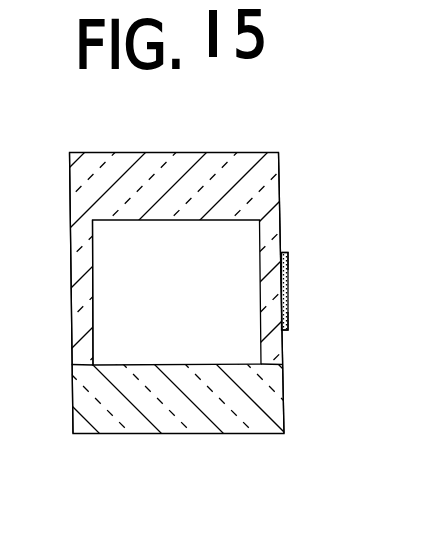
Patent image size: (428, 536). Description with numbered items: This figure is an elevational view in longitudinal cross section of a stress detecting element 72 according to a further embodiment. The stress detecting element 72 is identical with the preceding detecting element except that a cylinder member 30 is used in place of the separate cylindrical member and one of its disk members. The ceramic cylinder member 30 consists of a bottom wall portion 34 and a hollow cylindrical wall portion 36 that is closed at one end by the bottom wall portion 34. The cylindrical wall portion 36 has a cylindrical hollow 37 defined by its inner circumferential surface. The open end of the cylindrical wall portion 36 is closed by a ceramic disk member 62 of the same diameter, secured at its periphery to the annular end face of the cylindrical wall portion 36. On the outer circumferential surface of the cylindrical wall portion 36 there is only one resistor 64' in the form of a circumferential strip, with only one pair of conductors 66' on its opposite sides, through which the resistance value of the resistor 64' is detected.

The cylinder member 30 is at (63, 311).
The bottom wall portion 34 is at (144, 160).
The cylindrical wall portion 36 is at (73, 341).
The cylindrical hollow 37 is at (93, 254).
The disk member 62 is at (196, 418).
The resistor 64' is at (340, 292).
The conductors 66' is at (328, 284).
The stress detecting element 72 is at (287, 132).